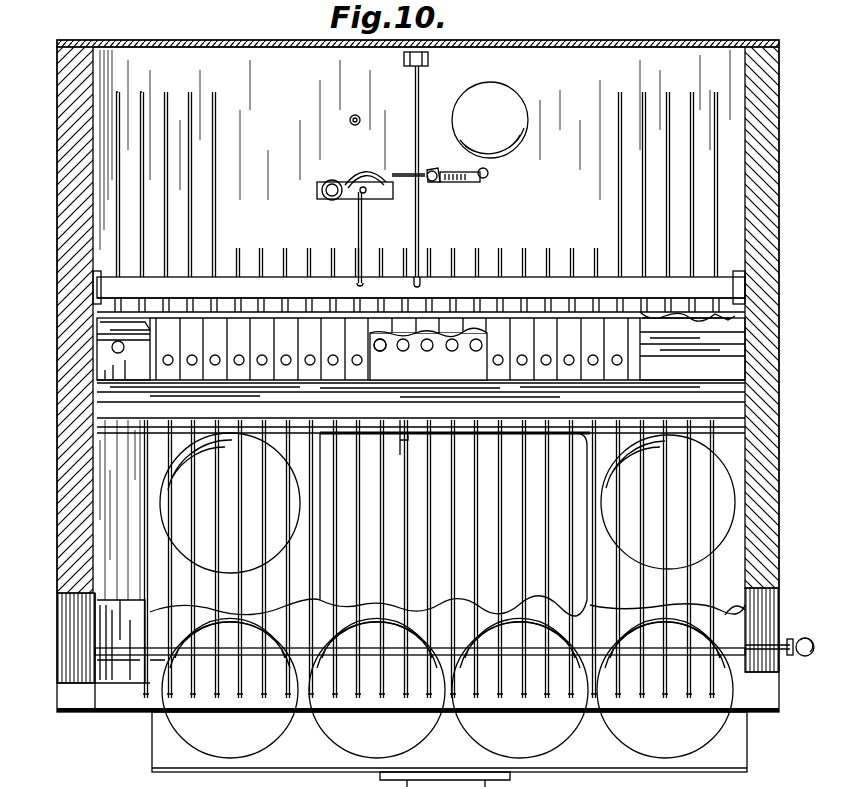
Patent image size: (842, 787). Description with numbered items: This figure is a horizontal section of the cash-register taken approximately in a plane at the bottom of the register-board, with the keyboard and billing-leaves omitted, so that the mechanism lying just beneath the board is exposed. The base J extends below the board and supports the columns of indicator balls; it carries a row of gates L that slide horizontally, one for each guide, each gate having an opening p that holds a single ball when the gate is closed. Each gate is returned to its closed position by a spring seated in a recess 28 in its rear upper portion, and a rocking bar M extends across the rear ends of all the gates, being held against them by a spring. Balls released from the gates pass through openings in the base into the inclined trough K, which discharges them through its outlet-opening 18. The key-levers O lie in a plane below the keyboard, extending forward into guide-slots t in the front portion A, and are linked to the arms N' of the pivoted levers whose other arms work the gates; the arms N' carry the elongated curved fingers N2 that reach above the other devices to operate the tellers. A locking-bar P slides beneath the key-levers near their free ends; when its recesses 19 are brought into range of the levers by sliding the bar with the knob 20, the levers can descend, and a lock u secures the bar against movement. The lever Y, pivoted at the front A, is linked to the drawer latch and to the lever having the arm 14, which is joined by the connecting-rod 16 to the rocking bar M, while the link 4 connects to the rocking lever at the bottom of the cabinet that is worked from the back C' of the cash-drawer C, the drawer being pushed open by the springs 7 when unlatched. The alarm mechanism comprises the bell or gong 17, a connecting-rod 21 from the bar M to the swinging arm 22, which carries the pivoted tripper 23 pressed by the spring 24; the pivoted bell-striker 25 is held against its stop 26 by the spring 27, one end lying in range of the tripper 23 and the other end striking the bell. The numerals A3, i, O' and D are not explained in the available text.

The front portion A is at (760, 700).
The top wall of frame A3 is at (212, 45).
The elongated curved fingers N2 is at (218, 106).
The arms of the levers N' is at (410, 248).
The rocking bar M is at (268, 277).
The arm 14 is at (428, 58).
The connecting-rod 16 is at (419, 97).
The bell or gong 17 is at (503, 98).
The link 4 is at (350, 116).
The swinging arm 22 is at (322, 200).
The spring 24 is at (355, 172).
The tripper 23 is at (370, 195).
The connecting-rod 21 is at (358, 222).
The bell-striker 25 is at (392, 174).
The stop 26 is at (437, 168).
The spring 27 is at (463, 184).
The inclined trough K is at (745, 345).
The outlet-opening 18 is at (112, 347).
The opening p is at (333, 366).
The base J is at (428, 354).
The pin i is at (380, 352).
The lever Y is at (400, 420).
The gates L is at (290, 382).
The recess 28 is at (740, 318).
The springs 7 is at (560, 427).
The guide-slots t is at (118, 700).
The key-levers O is at (481, 503).
The lower drum O' is at (375, 679).
The back of the cash-drawer C' is at (478, 516).
The locking-bar P is at (95, 668).
The recesses 19 is at (755, 612).
The lock u is at (745, 647).
The knob 20 is at (805, 657).
The base D is at (115, 683).
The cash-drawer C is at (464, 749).